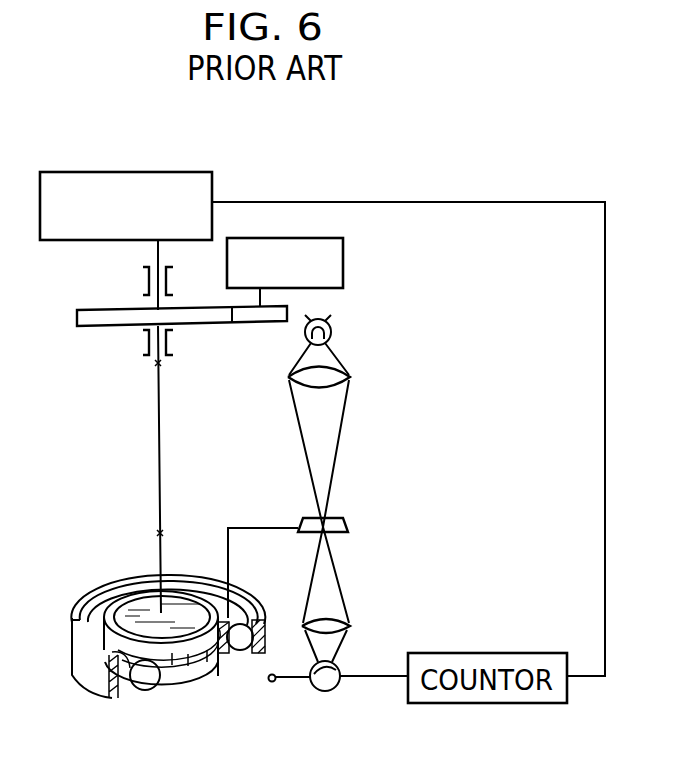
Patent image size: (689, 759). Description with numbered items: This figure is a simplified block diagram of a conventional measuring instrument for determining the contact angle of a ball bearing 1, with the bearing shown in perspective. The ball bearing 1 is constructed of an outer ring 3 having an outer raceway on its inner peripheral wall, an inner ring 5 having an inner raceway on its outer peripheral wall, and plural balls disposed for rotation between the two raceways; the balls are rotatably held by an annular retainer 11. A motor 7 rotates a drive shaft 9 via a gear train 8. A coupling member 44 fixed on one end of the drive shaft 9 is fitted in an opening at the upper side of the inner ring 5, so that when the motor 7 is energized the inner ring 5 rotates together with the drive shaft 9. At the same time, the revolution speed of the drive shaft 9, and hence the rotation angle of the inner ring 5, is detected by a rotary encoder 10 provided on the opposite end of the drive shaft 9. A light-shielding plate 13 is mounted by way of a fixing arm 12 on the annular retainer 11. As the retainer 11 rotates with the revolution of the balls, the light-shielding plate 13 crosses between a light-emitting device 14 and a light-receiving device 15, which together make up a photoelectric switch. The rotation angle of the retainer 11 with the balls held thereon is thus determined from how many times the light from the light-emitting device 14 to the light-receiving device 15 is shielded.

The ball bearing 1 is at (145, 624).
The outer ring 3 is at (83, 668).
The inner ring 5 is at (98, 603).
The coupling member 44 is at (143, 600).
The annular retainer 11 is at (160, 688).
The motor 7 is at (287, 238).
The gear train 8 is at (198, 326).
The drive shaft 9 is at (160, 458).
The rotary encoder 10 is at (120, 172).
The fixing arm 12 is at (265, 527).
The light-shielding plate 13 is at (348, 526).
The light-emitting device 14 is at (331, 330).
The light-receiving device 15 is at (328, 691).